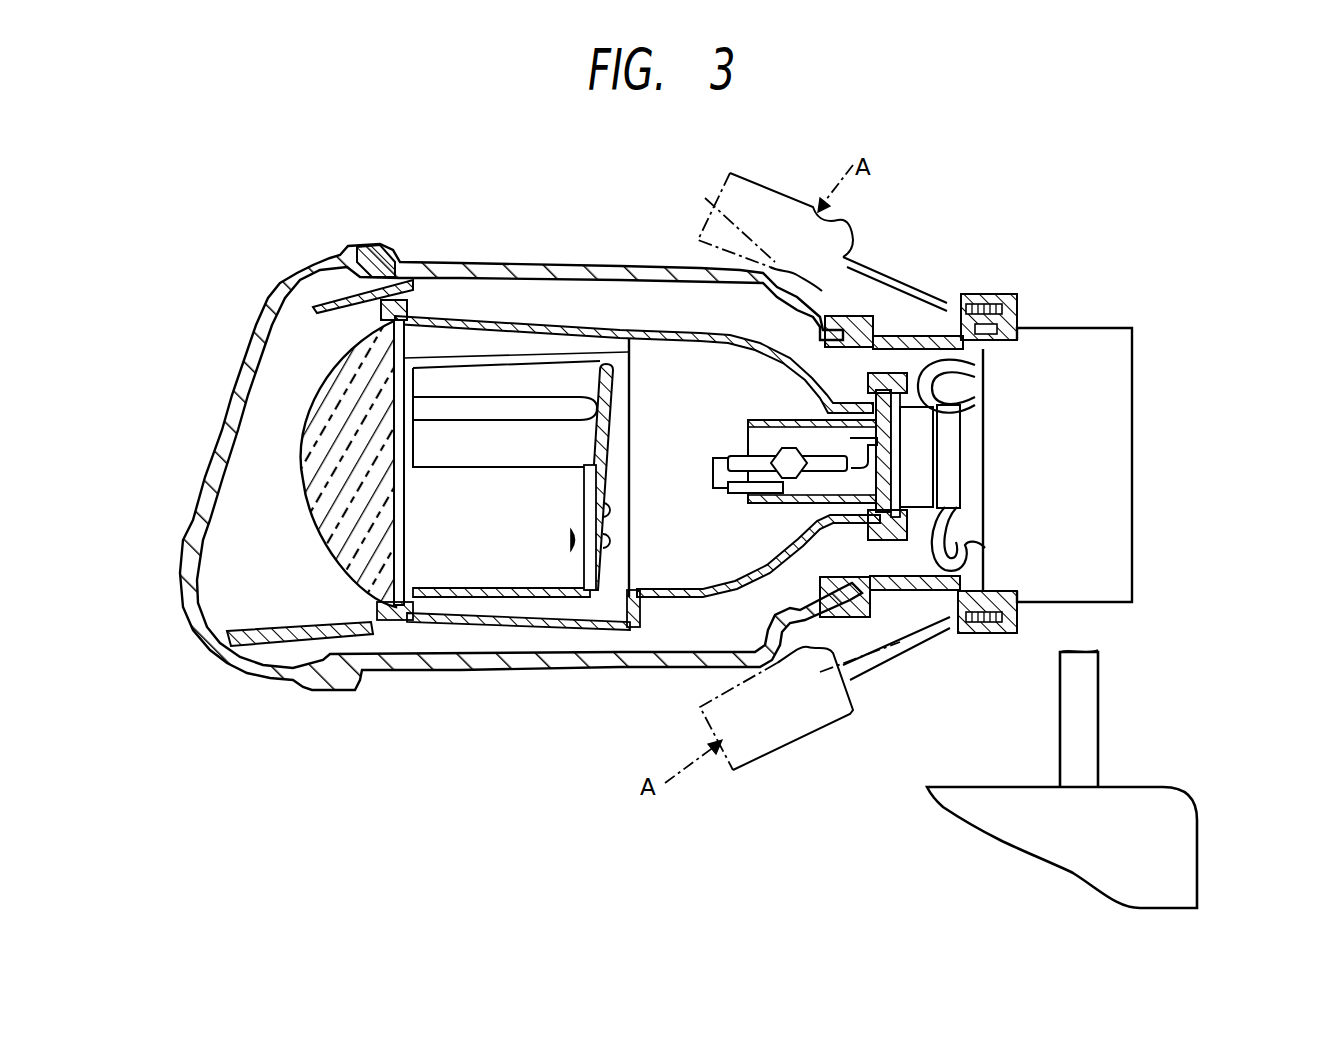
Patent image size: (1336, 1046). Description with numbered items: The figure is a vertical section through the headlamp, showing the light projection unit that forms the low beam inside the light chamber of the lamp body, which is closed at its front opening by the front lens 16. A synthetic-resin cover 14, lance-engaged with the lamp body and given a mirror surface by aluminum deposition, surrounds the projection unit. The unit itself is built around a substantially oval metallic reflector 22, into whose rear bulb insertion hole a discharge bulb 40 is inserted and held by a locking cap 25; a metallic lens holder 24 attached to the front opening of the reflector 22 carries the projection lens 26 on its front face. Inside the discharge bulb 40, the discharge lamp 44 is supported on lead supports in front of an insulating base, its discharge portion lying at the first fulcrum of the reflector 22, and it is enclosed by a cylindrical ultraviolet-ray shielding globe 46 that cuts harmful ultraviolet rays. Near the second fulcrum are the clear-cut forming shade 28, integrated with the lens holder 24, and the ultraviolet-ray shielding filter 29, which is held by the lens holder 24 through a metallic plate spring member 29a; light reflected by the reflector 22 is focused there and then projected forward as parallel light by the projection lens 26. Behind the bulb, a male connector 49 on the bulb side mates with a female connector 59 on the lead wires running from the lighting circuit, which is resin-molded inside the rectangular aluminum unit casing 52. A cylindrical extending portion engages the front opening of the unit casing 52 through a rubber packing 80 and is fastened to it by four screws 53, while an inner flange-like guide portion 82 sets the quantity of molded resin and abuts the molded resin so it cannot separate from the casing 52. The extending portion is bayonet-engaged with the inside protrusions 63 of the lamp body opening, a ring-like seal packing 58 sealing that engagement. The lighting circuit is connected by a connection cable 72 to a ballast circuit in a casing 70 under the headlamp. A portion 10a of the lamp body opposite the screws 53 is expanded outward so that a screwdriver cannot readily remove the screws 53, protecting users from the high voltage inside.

The expanded portion of lamp body 10a is at (770, 280).
The cover 14 is at (263, 650).
The front lens 16 is at (263, 333).
The reflector 22 is at (702, 350).
The lens holder 24 is at (445, 320).
The locking cap 25 is at (913, 437).
The projection lens 26 is at (300, 437).
The clear-cut forming shade 28 is at (598, 550).
The ultraviolet-ray shielding filter 29 is at (605, 362).
The plate spring member 29a is at (627, 400).
The discharge bulb 40 is at (780, 423).
The discharge lamp 44 is at (777, 500).
The ultraviolet-ray shielding globe 46 is at (760, 420).
The male connector 49 is at (963, 300).
The unit casing 52 is at (1135, 460).
The screws 53 is at (985, 300).
The seal packing 58 is at (883, 373).
The female connector 59 is at (957, 450).
The inside protrusions 63 is at (836, 587).
The casing 70 is at (1190, 852).
The connection cable 72 is at (1097, 710).
The rubber packing 80 is at (987, 330).
The guide portion 82 is at (983, 350).